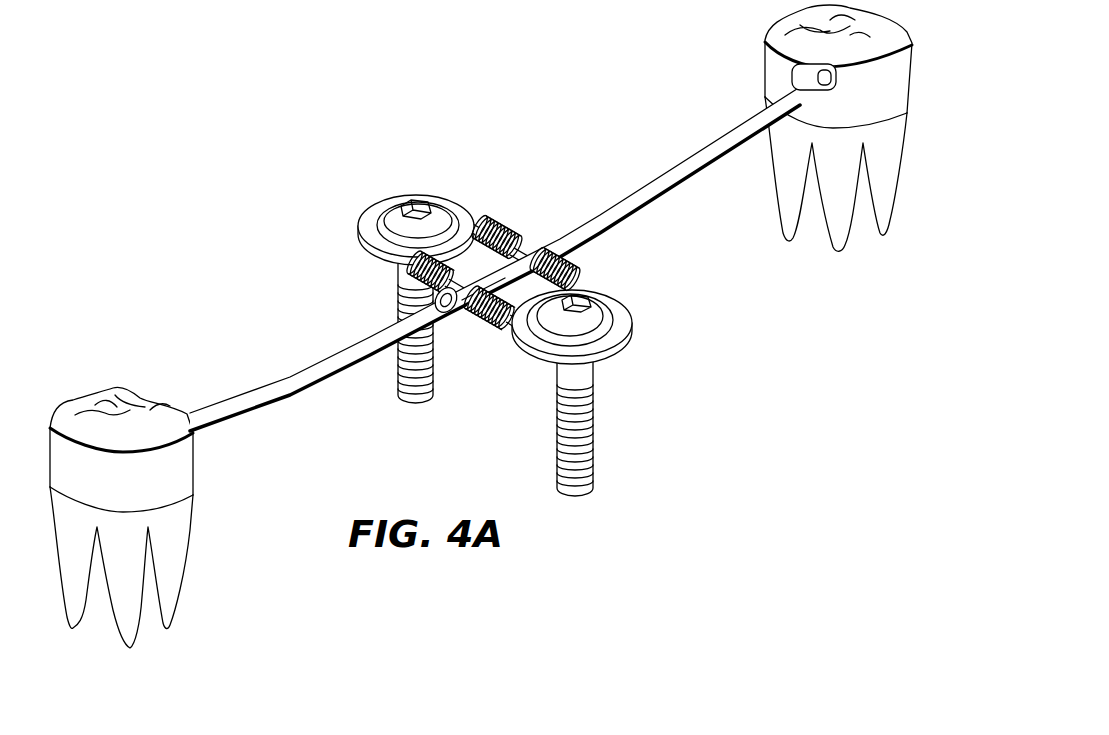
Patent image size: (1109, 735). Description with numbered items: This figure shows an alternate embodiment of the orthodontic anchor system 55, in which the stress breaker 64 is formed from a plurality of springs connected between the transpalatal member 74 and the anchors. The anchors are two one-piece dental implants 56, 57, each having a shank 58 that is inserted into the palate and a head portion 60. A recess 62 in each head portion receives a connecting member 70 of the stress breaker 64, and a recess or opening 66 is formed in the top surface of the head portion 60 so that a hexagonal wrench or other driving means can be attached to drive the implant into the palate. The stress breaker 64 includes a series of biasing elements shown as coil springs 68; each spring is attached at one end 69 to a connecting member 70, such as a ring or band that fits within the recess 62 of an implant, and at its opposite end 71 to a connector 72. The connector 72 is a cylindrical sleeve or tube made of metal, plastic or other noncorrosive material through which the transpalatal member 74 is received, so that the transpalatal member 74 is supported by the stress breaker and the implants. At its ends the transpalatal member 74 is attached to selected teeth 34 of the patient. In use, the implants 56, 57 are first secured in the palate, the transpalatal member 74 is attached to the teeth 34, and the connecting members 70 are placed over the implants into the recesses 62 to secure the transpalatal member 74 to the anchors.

The tooth 34 is at (176, 465).
The orthodontic anchor system 55 is at (495, 281).
The dental implant 56 is at (590, 395).
The dental implant 57 is at (398, 283).
The shank 58 is at (573, 383).
The head portion 60 is at (523, 275).
The recess 62 is at (388, 228).
The stress breaker 64 is at (504, 288).
The recess or opening 66 is at (433, 210).
The coil spring 68 is at (408, 295).
The one end 69 is at (507, 333).
The connecting member 70 is at (362, 222).
The opposite end 71 is at (456, 322).
The connector 72 is at (536, 243).
The transpalatal member 74 is at (495, 259).